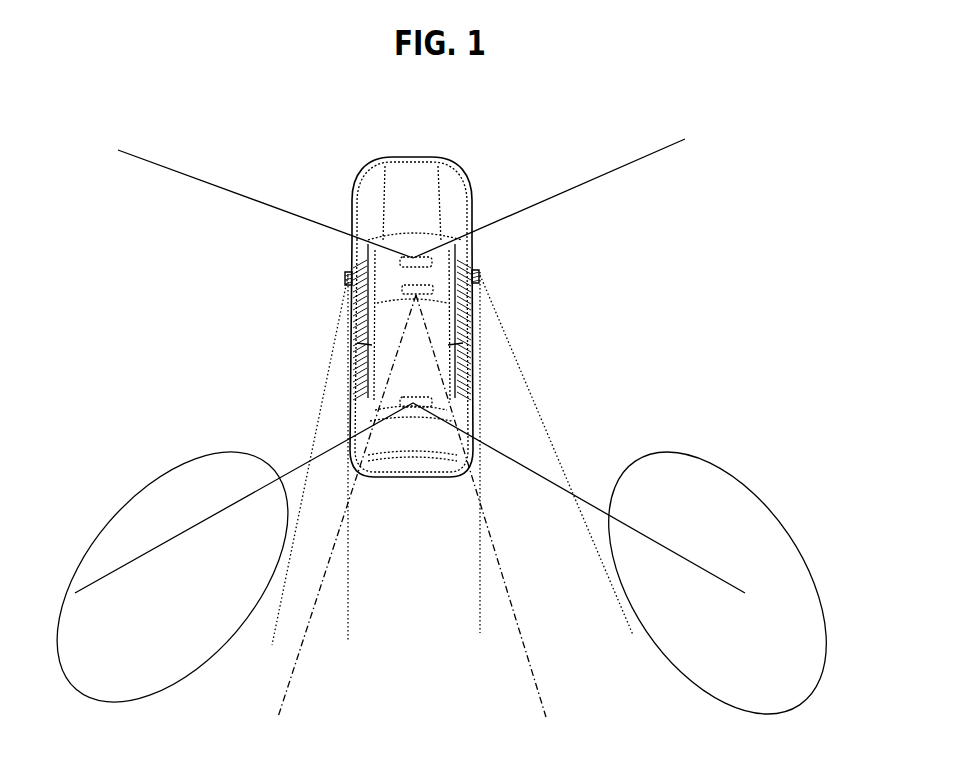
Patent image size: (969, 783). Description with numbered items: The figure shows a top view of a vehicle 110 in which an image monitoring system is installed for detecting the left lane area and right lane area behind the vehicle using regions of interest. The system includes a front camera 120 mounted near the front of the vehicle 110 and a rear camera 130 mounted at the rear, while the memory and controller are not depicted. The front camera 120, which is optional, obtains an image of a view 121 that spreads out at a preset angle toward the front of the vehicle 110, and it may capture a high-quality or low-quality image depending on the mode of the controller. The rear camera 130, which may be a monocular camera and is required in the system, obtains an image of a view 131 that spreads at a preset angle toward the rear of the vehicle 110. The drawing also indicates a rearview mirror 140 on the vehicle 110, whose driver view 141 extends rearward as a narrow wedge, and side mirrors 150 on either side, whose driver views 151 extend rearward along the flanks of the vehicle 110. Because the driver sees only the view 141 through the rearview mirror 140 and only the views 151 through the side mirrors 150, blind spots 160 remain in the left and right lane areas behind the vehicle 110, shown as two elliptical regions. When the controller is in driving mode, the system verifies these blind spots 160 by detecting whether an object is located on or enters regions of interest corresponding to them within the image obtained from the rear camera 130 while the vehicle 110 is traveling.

The vehicle 110 is at (407, 182).
The front camera 120 is at (421, 257).
The view of the front camera 121 is at (622, 168).
The rear camera 130 is at (408, 405).
The view of the rear camera 131 is at (133, 557).
The rearview mirror 140 is at (421, 287).
The view of the driver using the rearview mirror 141 is at (532, 658).
The side mirrors 150 is at (347, 279).
The view of the driver using the side mirrors 151 is at (275, 622).
The blind spots 160 is at (147, 483).